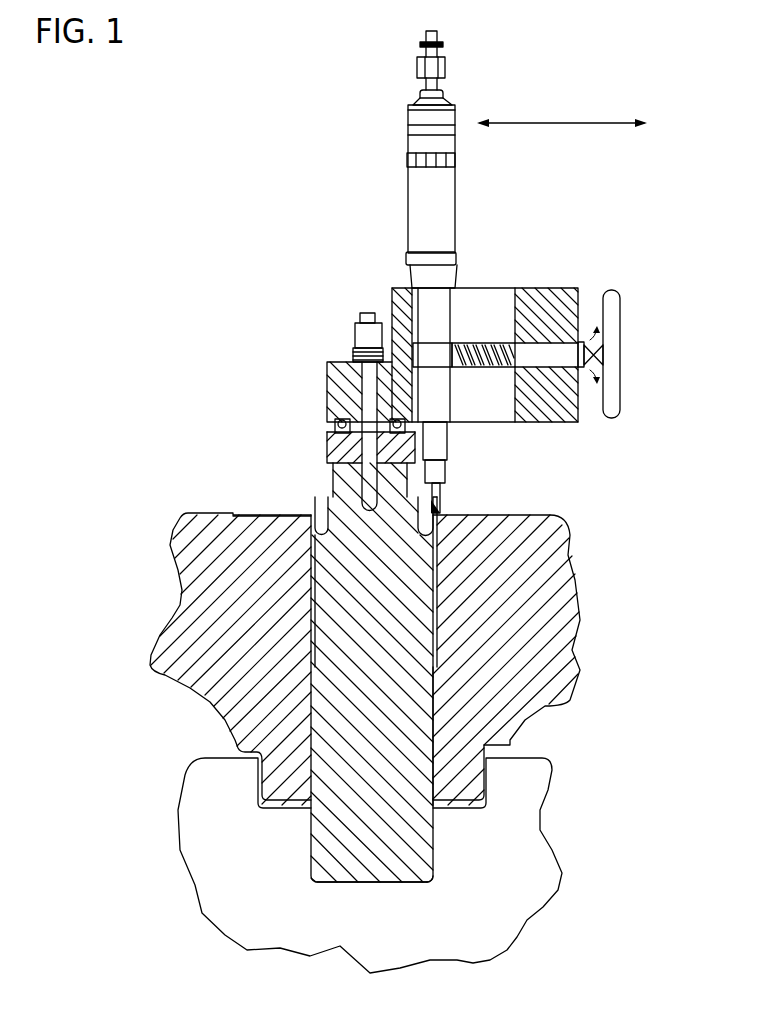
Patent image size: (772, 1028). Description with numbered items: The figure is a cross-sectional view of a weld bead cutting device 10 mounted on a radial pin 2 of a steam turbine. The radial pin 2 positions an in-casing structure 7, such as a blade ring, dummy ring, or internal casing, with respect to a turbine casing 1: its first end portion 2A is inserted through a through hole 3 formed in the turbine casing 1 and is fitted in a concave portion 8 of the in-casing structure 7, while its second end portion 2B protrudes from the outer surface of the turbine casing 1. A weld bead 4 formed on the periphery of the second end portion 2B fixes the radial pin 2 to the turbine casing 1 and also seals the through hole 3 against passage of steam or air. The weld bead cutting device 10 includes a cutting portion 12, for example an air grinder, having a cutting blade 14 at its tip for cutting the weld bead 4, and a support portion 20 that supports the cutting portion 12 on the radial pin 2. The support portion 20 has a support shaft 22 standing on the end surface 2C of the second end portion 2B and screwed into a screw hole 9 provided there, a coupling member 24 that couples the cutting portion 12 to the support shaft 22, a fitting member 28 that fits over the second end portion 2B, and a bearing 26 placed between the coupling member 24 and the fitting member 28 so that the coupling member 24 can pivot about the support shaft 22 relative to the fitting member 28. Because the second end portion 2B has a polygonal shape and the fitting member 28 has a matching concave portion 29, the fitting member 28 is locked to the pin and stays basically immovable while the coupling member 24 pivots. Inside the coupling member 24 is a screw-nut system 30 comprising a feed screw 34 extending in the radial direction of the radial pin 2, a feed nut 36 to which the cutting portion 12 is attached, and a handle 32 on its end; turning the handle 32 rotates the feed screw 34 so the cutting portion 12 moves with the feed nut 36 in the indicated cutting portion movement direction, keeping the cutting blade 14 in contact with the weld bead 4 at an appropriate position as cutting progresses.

The turbine casing 1 is at (192, 513).
The radial pin 2 is at (420, 578).
The first end portion 2A is at (352, 852).
The second end portion 2B is at (333, 480).
The end surface 2C is at (325, 430).
The through hole 3 is at (434, 715).
The weld bead 4 is at (302, 511).
The in-casing structure 7 is at (540, 750).
The concave portion 8 is at (420, 862).
The screw hole 9 is at (316, 499).
The weld bead cutting device 10 is at (660, 44).
The cutting portion 12 is at (456, 200).
The cutting blade 14 is at (443, 498).
The support portion 20 is at (330, 299).
The support shaft 22 is at (331, 360).
The coupling member 24 is at (545, 290).
The bearing 26 is at (327, 398).
The fitting member 28 is at (440, 428).
The concave portion 29 is at (398, 476).
The screw-nut system 30 is at (642, 345).
The handle 32 is at (612, 292).
The feed screw 34 is at (483, 342).
The feed nut 36 is at (440, 335).